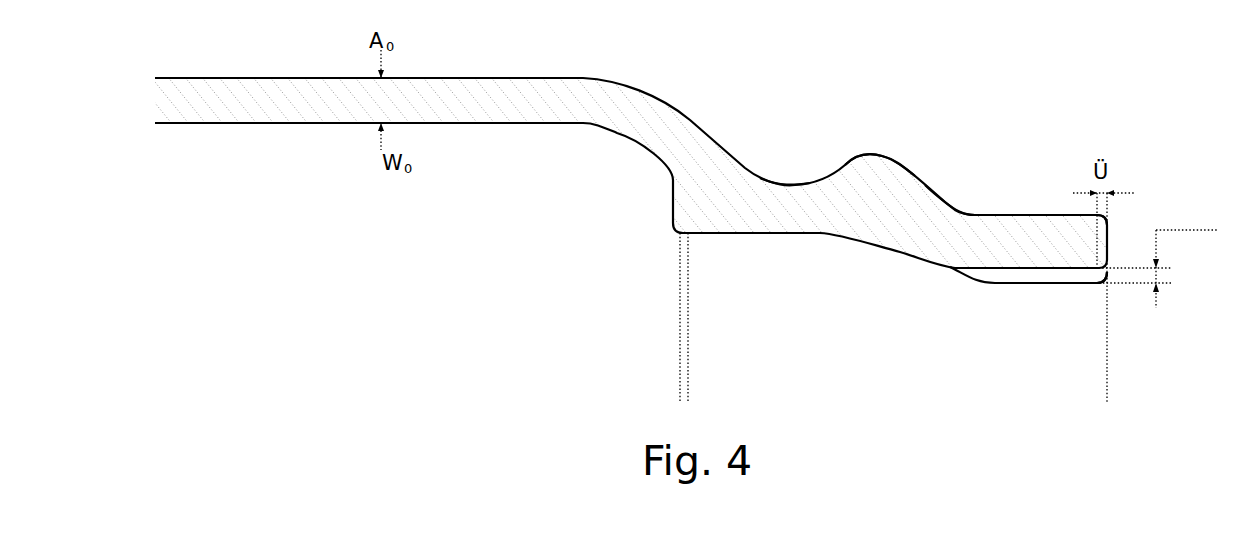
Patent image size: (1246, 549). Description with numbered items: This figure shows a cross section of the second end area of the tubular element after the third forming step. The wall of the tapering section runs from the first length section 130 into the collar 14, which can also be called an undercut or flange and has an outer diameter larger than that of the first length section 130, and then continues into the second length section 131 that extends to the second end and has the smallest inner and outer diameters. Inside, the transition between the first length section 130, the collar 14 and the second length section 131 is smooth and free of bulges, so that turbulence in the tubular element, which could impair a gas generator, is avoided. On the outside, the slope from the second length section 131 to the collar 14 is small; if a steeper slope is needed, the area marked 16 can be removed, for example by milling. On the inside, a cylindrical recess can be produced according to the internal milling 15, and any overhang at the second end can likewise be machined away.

The first length section 130 is at (794, 185).
The collar 14 is at (878, 152).
The removable area 16 is at (963, 200).
The second length section 131 is at (1043, 213).
The internal milling 15 is at (1217, 230).